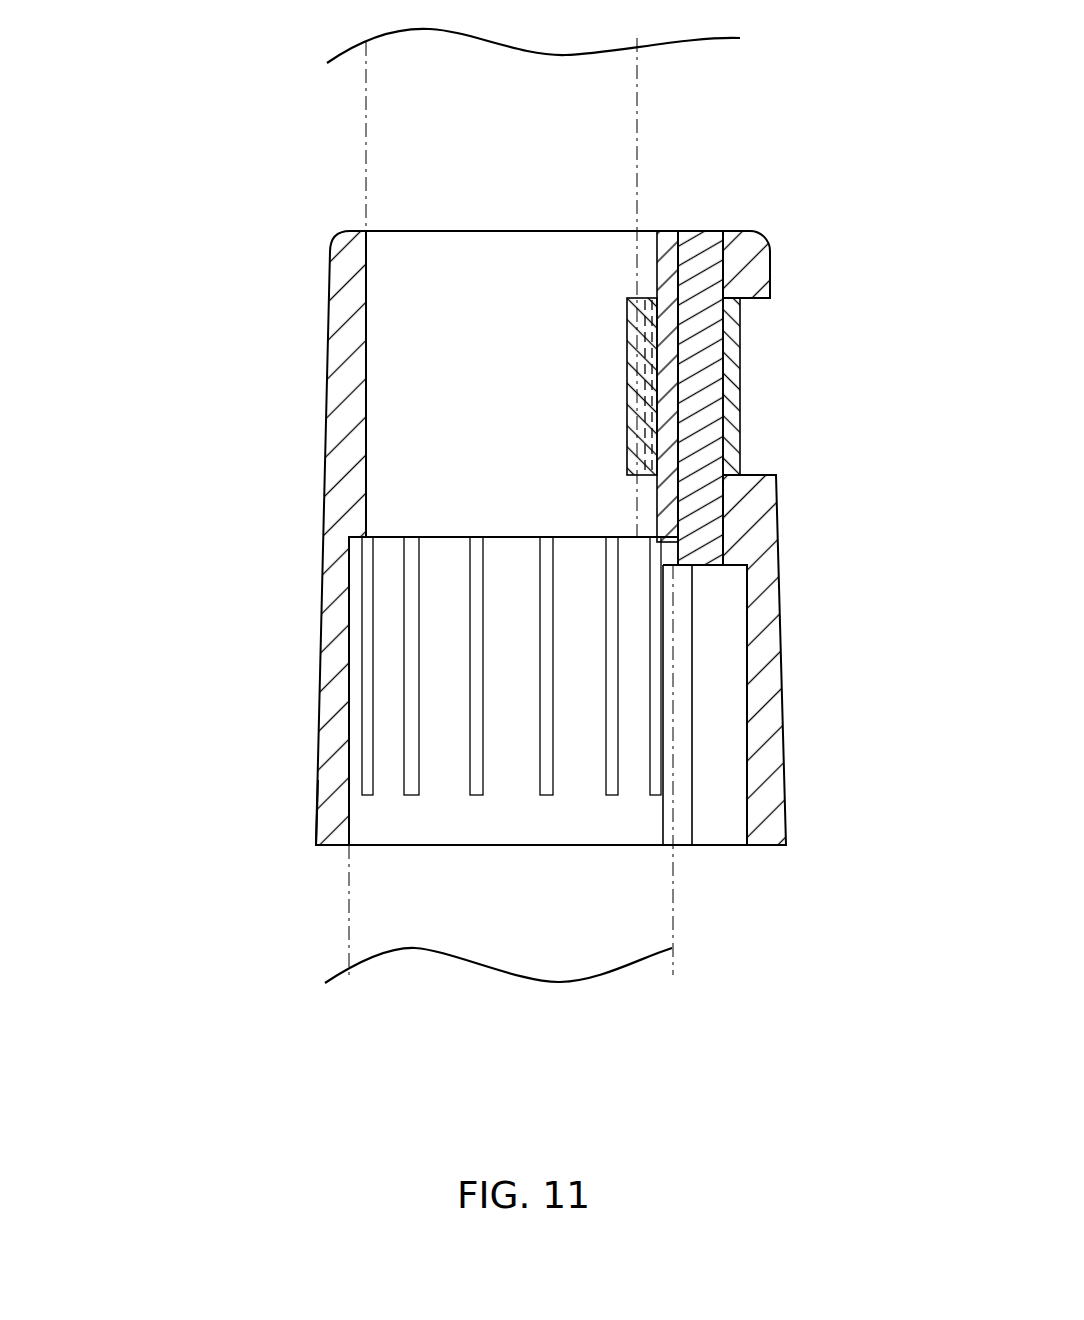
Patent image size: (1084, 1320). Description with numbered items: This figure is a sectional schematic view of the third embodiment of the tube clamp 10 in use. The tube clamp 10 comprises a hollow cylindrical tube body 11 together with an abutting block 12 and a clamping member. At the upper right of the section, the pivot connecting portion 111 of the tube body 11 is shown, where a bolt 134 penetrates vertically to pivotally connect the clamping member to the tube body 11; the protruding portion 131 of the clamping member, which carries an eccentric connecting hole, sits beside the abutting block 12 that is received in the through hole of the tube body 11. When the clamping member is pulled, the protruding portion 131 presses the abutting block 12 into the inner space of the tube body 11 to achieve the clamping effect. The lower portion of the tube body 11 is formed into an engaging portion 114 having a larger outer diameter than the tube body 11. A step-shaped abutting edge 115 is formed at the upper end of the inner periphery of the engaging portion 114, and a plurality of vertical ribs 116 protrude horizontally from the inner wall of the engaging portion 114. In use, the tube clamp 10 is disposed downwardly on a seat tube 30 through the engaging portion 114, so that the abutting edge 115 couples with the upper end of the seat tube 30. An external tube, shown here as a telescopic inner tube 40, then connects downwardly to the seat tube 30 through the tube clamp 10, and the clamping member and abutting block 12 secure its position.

The tube clamp 10 is at (324, 262).
The tube body 11 is at (358, 375).
The abutting block 12 is at (628, 298).
The seat tube 30 is at (393, 892).
The telescopic inner tube 40 is at (400, 108).
The pivot connecting portion 111 is at (747, 423).
The engaging portion 114 is at (316, 796).
The abutting edge 115 is at (362, 545).
The vertical ribs 116 is at (372, 739).
The protruding portion 131 is at (680, 355).
The bolt 134 is at (697, 270).